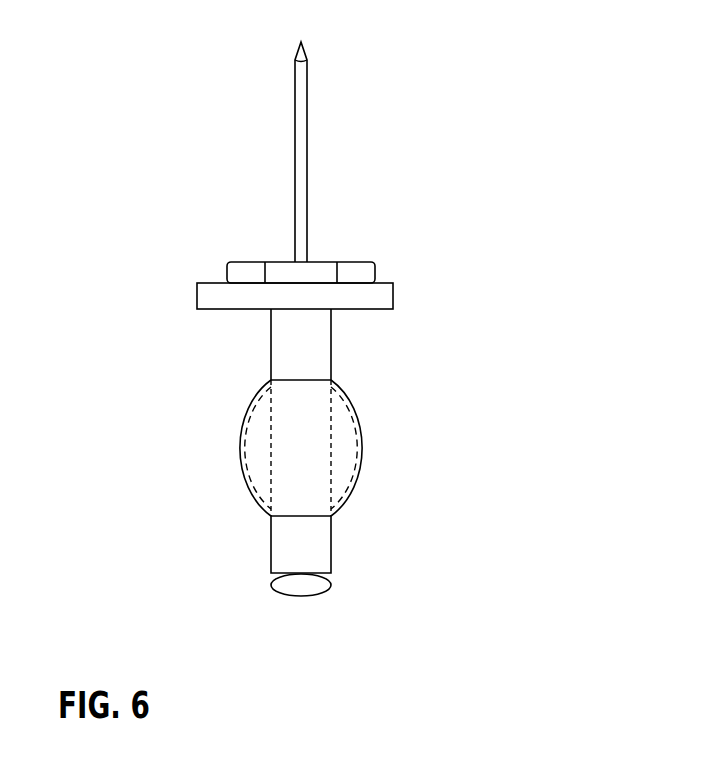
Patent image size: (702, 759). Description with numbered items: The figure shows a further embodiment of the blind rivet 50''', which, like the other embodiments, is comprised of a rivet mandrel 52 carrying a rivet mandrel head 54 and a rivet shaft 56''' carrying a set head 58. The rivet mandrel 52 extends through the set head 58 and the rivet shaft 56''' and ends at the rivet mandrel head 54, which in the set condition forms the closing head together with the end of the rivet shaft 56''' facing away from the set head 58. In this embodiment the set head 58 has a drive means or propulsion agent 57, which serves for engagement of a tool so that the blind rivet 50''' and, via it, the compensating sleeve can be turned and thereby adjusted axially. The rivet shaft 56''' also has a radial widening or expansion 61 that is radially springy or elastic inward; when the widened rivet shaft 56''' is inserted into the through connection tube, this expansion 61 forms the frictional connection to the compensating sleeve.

The blind rivet 50''' is at (540, 74).
The rivet mandrel 52 is at (305, 105).
The propulsion agent 57 is at (361, 266).
The set head 58 is at (385, 302).
The rivet shaft 56''' is at (379, 441).
The radial expansion 61 is at (358, 445).
The rivet mandrel head 54 is at (317, 585).